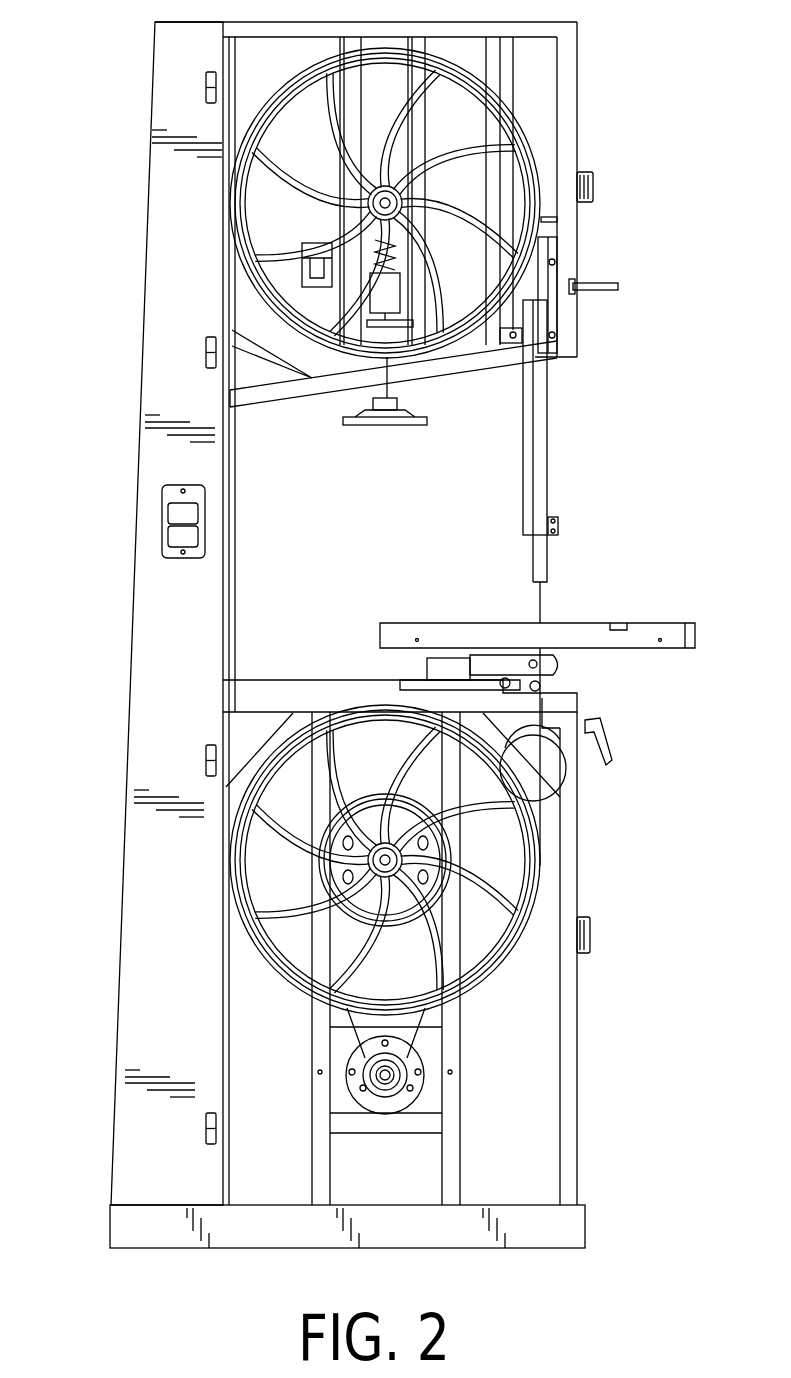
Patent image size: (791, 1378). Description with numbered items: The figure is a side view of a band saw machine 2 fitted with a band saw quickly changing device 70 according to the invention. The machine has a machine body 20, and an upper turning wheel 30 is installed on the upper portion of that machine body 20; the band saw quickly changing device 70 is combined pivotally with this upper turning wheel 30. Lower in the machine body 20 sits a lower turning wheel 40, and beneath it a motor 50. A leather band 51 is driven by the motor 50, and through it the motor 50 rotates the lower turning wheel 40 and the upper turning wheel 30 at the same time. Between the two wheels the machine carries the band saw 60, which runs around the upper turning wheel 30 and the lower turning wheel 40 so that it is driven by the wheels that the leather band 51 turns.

The band saw 2 is at (146, 237).
The machine body 20 is at (126, 653).
The upper turning wheel 30 is at (536, 160).
The lower turning wheel 40 is at (545, 861).
The motor 50 is at (340, 1086).
The leather band 51 is at (420, 1040).
The saw blade 60 is at (550, 597).
The band saw quickly changing device 70 is at (430, 262).